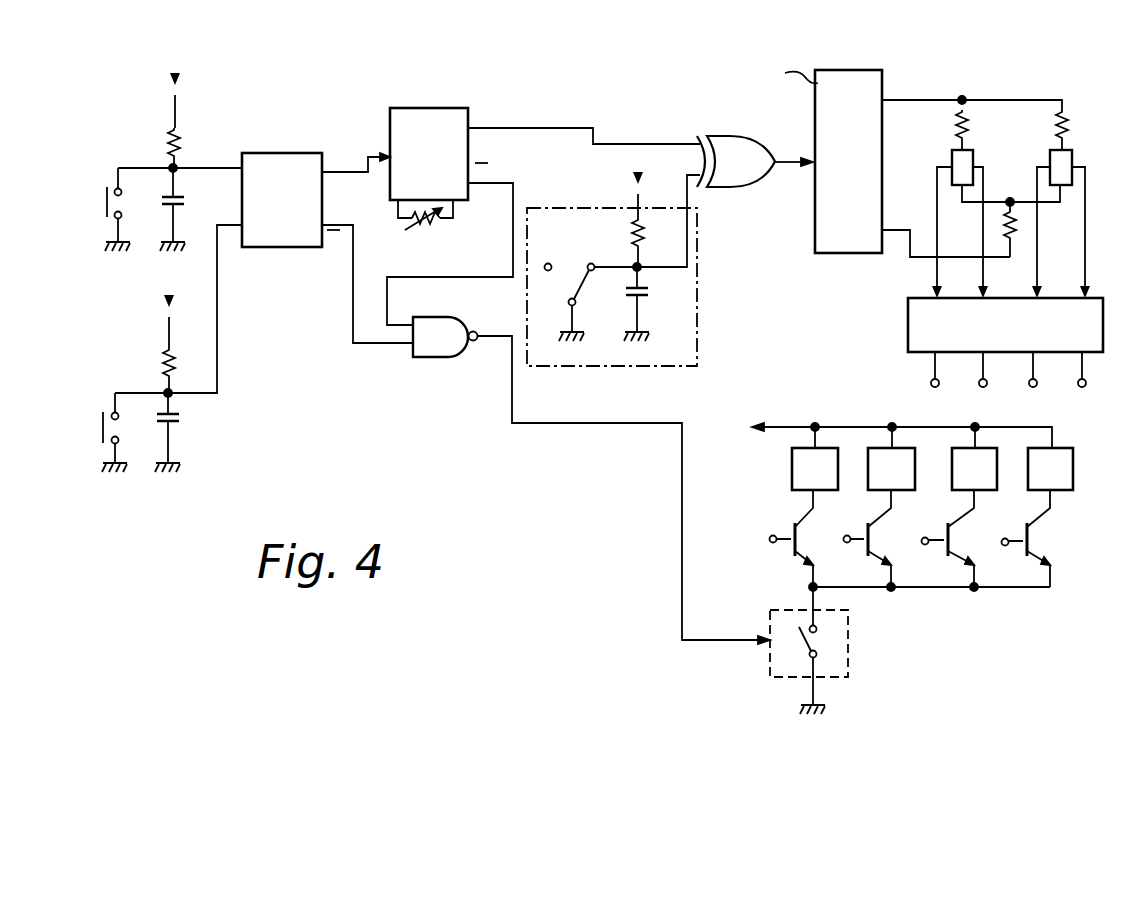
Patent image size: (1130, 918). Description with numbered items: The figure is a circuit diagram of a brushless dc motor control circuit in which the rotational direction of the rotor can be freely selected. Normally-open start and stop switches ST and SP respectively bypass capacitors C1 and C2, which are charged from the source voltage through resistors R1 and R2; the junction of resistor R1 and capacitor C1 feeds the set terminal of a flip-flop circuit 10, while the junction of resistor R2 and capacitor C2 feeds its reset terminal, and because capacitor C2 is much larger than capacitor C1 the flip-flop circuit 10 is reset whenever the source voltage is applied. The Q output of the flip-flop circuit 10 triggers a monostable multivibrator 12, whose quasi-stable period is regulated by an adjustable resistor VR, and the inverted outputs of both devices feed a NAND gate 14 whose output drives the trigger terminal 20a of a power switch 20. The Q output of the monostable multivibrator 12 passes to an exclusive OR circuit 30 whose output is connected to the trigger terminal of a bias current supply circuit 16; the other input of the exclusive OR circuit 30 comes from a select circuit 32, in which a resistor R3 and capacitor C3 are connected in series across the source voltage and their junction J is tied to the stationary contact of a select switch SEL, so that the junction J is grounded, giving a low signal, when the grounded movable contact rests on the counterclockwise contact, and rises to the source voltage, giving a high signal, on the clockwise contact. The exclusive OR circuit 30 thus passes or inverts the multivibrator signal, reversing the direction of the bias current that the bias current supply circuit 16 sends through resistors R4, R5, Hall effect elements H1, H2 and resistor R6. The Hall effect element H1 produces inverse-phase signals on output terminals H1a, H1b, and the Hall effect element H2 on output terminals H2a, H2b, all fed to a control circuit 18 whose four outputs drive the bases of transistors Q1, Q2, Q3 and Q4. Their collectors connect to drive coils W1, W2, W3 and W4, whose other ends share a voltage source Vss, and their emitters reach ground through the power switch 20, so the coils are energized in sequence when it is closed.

The flip-flop circuit 10 is at (281, 248).
The monostable multivibrator 12 is at (445, 109).
The NAND gate 14 is at (450, 358).
The bias current supply circuit 16 is at (842, 254).
The control circuit 18 is at (908, 328).
The power switch 20 is at (850, 637).
The trigger terminal 20a is at (748, 643).
The exclusive OR circuit 30 is at (728, 136).
The select circuit 32 is at (698, 289).
The start switch ST is at (166, 199).
The stop switch SP is at (151, 422).
The resistor R1 is at (181, 141).
The resistor R2 is at (176, 355).
The resistor R3 is at (644, 237).
The resistor R4 is at (970, 128).
The resistor R5 is at (1070, 128).
The resistor R6 is at (1018, 236).
The capacitor C1 is at (187, 201).
The capacitor C2 is at (184, 421).
The capacitor C3 is at (649, 295).
The adjustable resistor VR is at (425, 232).
The select switch SEL is at (556, 292).
The junction J is at (634, 270).
The Hall effect element H1 is at (950, 154).
The output terminal H1a is at (948, 167).
The output terminal H1b is at (975, 163).
The Hall effect element H2 is at (1050, 158).
The output terminal H2a is at (1040, 172).
The output terminal H2b is at (1076, 165).
The drive coil W1 is at (815, 469).
The drive coil W2 is at (891, 469).
The drive coil W3 is at (974, 469).
The drive coil W4 is at (1050, 469).
The transistor Q1 is at (810, 532).
The transistor Q2 is at (886, 532).
The transistor Q3 is at (968, 532).
The transistor Q4 is at (1045, 532).
The voltage source Vss is at (884, 434).